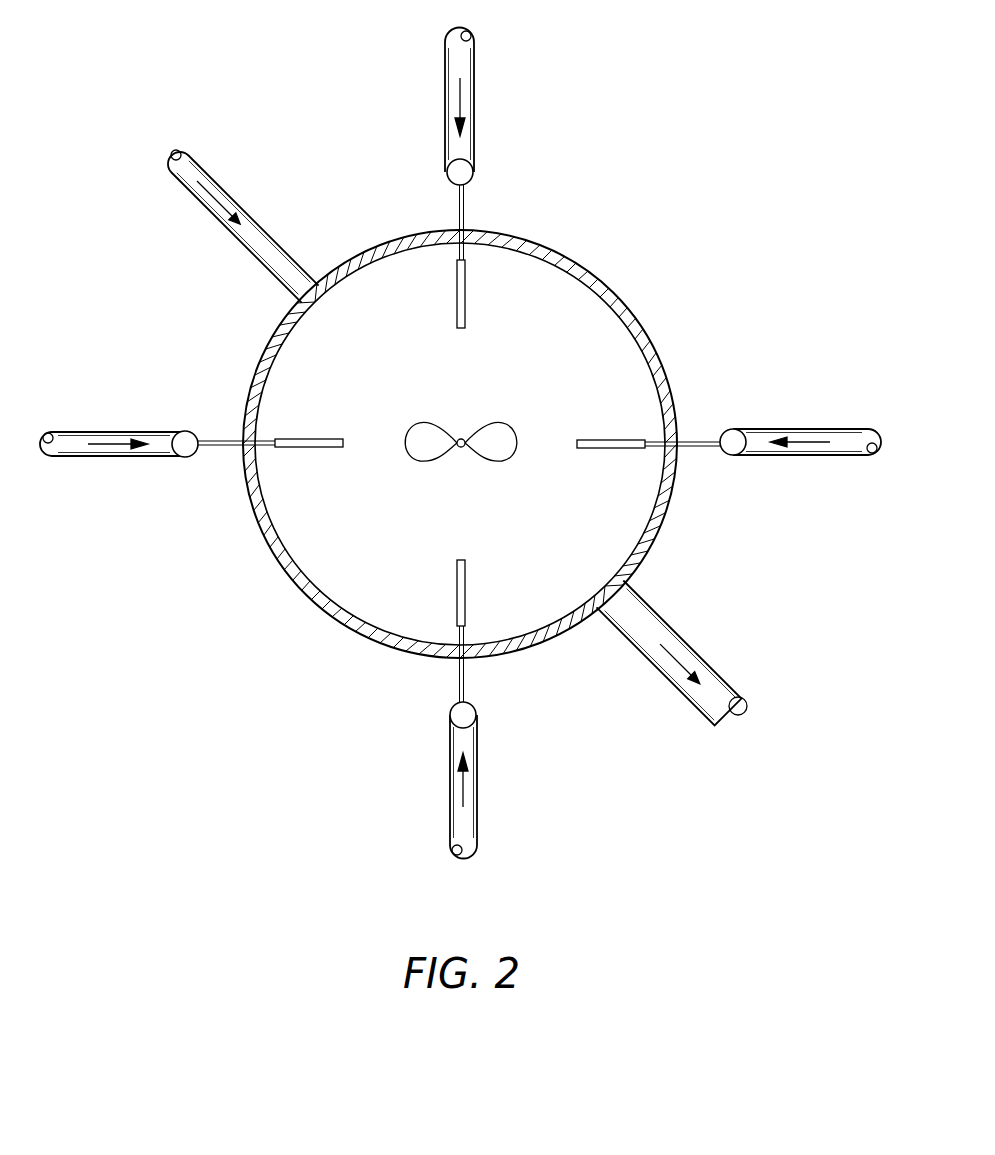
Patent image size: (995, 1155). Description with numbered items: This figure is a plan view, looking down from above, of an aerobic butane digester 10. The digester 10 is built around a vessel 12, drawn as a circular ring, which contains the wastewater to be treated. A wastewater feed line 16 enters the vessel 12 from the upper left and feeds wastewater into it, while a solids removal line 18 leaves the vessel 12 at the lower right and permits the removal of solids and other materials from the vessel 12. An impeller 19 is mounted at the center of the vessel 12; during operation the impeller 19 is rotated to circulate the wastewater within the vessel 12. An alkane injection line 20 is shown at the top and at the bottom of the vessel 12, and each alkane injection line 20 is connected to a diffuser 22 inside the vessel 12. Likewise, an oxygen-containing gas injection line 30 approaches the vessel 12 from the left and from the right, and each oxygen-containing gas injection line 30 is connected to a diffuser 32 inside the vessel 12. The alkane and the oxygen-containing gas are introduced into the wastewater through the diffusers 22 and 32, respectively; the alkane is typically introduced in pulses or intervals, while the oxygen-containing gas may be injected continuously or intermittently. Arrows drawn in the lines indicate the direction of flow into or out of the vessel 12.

The aerobic butane digester 10 is at (623, 173).
The vessel 12 is at (633, 312).
The wastewater feed line 16 is at (262, 247).
The solids removal line 18 is at (708, 678).
The impeller 19 is at (498, 435).
The alkane injection line 20 is at (473, 61).
The diffusers 22 is at (463, 303).
The oxygen-containing gas injection line 30 is at (110, 452).
The diffusers 32 is at (322, 447).